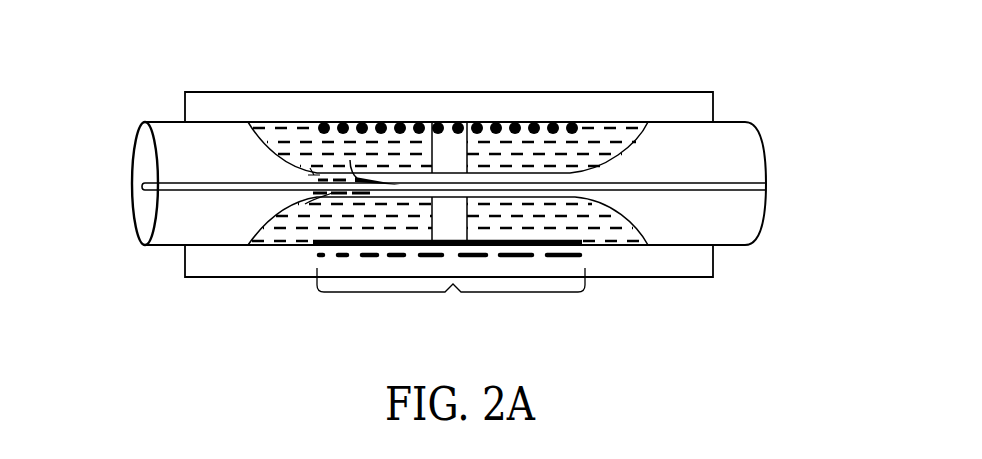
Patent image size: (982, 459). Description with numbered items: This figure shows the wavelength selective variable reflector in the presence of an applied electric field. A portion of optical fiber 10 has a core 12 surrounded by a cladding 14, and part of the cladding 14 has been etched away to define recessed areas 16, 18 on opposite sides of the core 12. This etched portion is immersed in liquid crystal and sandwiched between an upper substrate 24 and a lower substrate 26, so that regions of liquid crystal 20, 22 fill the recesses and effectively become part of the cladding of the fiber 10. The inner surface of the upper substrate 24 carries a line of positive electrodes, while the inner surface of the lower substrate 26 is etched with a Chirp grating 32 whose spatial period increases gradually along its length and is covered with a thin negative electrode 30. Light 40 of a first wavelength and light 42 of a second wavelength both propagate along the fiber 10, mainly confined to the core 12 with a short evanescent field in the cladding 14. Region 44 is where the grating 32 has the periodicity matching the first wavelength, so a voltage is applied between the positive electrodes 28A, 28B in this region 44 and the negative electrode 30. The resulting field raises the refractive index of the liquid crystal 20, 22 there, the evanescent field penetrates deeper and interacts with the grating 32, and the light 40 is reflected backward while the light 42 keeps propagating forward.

The optical fiber 10 is at (92, 99).
The core 12 is at (192, 187).
The cladding 14 is at (165, 201).
The recessed area 16 is at (620, 154).
The recessed area 18 is at (620, 214).
The region of liquid crystal 20 is at (608, 140).
The region of liquid crystal 22 is at (608, 233).
The upper substrate 24 is at (713, 93).
The lower substrate 26 is at (713, 262).
The positive electrode 28A is at (433, 122).
The positive electrode 28B is at (467, 122).
The negative electrode 30 is at (404, 247).
The Chirp grating 32 is at (451, 295).
The light 40 is at (316, 172).
The light 42 is at (355, 190).
The region 44 is at (445, 160).